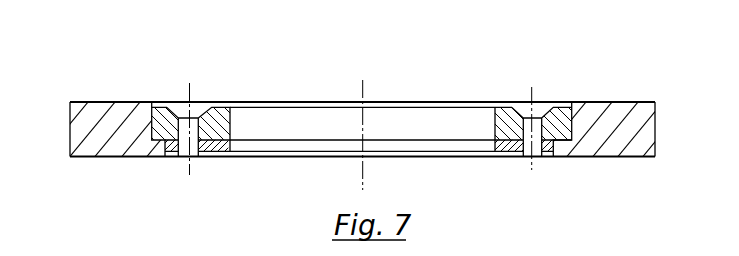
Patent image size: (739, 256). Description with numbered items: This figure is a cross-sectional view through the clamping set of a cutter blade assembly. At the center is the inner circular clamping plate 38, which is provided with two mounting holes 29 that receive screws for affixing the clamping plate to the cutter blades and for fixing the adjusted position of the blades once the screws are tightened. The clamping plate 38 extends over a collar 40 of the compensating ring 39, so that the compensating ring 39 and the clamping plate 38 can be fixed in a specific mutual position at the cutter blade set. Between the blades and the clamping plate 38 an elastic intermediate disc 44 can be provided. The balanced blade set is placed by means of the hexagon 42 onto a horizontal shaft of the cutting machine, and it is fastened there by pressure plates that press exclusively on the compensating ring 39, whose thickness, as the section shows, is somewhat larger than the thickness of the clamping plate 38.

The mounting hole 29 is at (196, 107).
The inner circular clamping plate 38 is at (160, 107).
The compensating ring 39 is at (617, 120).
The collar 40 is at (565, 110).
The hexagon 42 is at (405, 121).
The elastic intermediate disc 44 is at (216, 153).